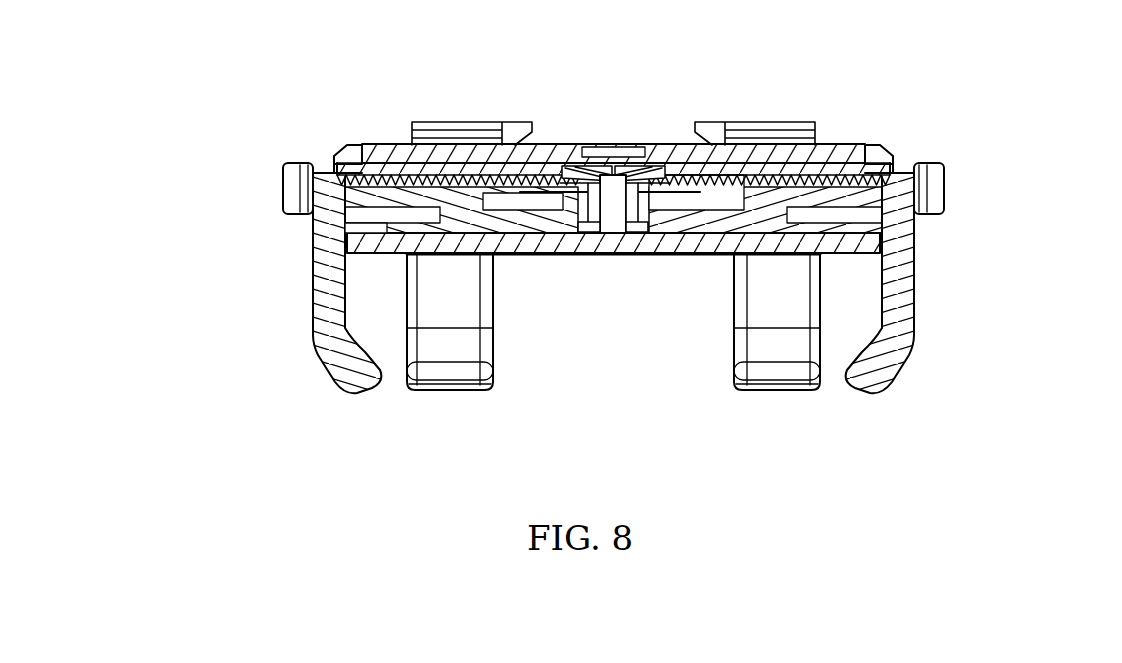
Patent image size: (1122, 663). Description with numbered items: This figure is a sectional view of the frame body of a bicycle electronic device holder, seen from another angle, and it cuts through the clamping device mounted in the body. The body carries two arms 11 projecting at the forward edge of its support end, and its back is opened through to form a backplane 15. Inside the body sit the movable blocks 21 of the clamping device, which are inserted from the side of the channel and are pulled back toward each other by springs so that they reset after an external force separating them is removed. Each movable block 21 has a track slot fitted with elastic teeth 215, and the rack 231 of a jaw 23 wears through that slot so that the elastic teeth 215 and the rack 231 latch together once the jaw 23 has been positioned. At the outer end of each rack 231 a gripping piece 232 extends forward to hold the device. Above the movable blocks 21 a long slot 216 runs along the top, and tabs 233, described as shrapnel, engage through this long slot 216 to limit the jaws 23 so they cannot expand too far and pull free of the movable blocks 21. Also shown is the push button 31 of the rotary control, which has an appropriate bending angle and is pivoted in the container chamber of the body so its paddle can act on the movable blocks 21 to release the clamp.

The arms 11 is at (430, 385).
The backplane 15 is at (611, 160).
The movable blocks 21 is at (873, 157).
The jaws 23 is at (870, 208).
The push button 31 is at (290, 180).
The elastic teeth 215 is at (378, 175).
The long slot 216 is at (615, 252).
The rack 231 is at (613, 180).
The gripping piece 232 is at (330, 306).
The tabs 233 is at (662, 253).